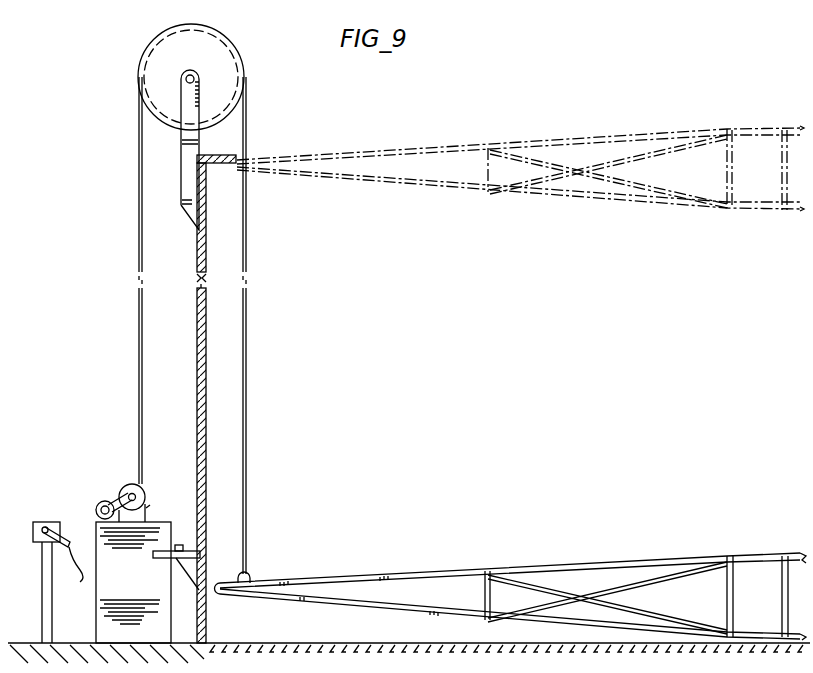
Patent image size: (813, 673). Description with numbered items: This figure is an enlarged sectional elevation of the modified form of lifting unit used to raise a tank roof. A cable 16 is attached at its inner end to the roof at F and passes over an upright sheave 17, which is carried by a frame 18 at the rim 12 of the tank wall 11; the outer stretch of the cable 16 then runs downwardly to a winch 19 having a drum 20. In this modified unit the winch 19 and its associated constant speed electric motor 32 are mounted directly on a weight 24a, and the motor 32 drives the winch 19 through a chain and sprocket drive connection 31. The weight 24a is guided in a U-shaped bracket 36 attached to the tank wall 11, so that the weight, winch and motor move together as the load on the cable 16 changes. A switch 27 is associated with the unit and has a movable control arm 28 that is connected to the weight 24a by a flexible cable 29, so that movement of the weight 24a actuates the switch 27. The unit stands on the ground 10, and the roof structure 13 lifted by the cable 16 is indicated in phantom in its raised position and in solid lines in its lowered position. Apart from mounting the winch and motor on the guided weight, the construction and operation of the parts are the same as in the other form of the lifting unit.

The ground 10 is at (285, 641).
The wall 11 is at (204, 396).
The rim 12 is at (219, 158).
The boom 13 is at (372, 146).
The cable 16 is at (246, 366).
The upright sheave 17 is at (199, 51).
The frame 18 is at (183, 185).
The winch 19 is at (128, 484).
The drum 20 is at (150, 506).
The weight 24a is at (142, 590).
The switch 27 is at (34, 524).
The movable control arm 28 is at (64, 528).
The flexible cable 29 is at (78, 584).
The chain and sprocket drive connection 31 is at (112, 500).
The constant speed electric motor 32 is at (96, 508).
The U-shaped bracket 36 is at (196, 551).
The roof attachment point F is at (252, 579).